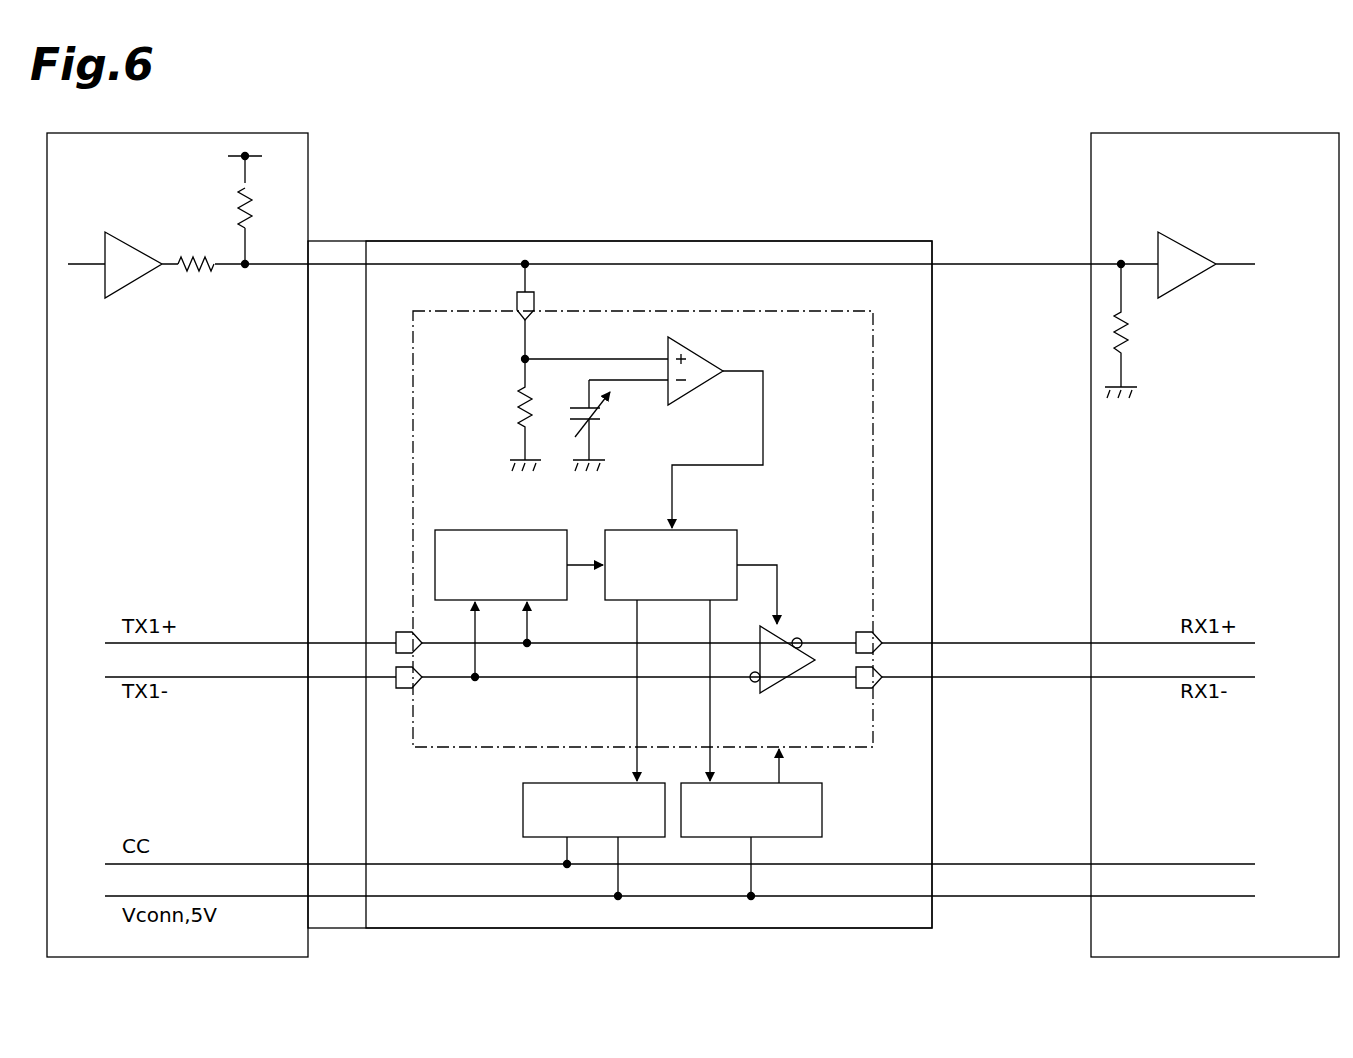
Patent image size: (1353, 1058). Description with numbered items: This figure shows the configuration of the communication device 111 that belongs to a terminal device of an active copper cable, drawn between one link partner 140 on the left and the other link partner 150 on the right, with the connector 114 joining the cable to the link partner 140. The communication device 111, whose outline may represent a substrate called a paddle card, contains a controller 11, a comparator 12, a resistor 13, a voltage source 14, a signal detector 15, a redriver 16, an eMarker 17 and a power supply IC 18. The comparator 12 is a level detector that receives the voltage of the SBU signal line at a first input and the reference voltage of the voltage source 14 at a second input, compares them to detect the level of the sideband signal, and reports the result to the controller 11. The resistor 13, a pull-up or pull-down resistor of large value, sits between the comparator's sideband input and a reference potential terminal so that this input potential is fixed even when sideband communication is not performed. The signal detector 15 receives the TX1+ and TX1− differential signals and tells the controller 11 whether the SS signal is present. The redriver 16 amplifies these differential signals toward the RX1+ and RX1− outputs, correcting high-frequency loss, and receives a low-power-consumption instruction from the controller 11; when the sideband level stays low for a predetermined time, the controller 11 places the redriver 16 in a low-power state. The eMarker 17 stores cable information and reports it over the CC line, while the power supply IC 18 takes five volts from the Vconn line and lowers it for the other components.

The link partner 140 is at (187, 133).
The link partner 150 is at (1195, 133).
The connector 114 is at (337, 241).
The communication device 111 is at (557, 241).
The comparator 12 is at (705, 350).
The resistor 13 is at (515, 405).
The voltage source 14 is at (605, 415).
The signal detector 15 is at (515, 528).
The controller 11 is at (700, 528).
The redriver 16 is at (780, 690).
The eMarker 17 is at (522, 810).
The power supply IC 18 is at (823, 812).